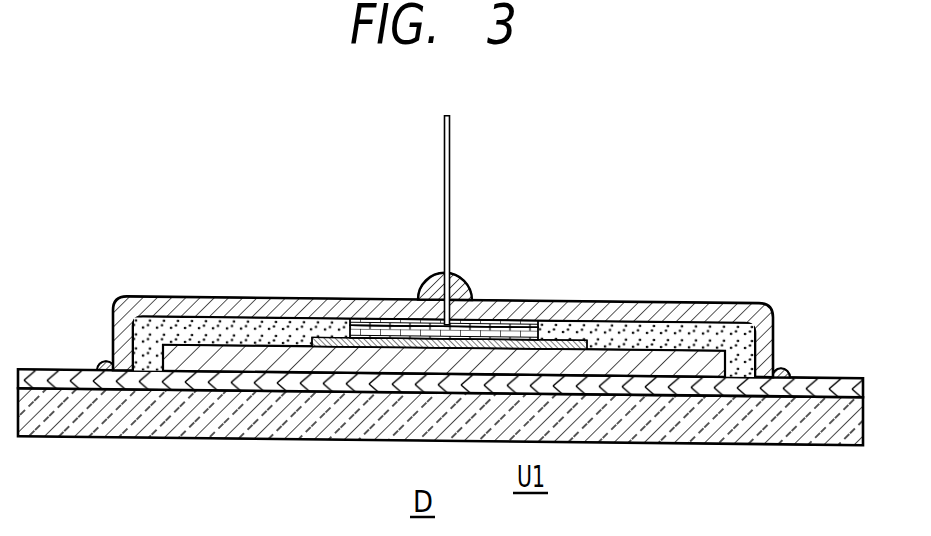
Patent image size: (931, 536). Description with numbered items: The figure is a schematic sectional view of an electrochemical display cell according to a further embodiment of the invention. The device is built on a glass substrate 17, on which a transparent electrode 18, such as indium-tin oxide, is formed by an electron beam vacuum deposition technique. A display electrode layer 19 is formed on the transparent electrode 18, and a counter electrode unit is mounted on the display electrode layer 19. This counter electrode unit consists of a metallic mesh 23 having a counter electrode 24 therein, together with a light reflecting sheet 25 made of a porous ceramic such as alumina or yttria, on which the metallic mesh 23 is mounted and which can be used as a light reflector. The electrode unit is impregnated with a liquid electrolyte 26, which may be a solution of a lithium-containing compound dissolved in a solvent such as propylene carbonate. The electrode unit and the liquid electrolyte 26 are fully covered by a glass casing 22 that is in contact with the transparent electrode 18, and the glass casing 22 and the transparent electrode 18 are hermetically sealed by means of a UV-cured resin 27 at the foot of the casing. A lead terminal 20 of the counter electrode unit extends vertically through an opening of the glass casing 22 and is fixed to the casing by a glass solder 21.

The glass substrate 17 is at (86, 398).
The transparent electrode 18 is at (43, 368).
The display electrode layer 19 is at (212, 357).
The lead terminal 20 is at (444, 168).
The glass solder 21 is at (462, 279).
The glass casing 22 is at (623, 301).
The metallic mesh 23 is at (367, 322).
The counter electrode 24 is at (400, 333).
The light reflecting sheet 25 is at (503, 338).
The liquid electrolyte 26 is at (690, 337).
The UV-cured resin 27 is at (781, 360).